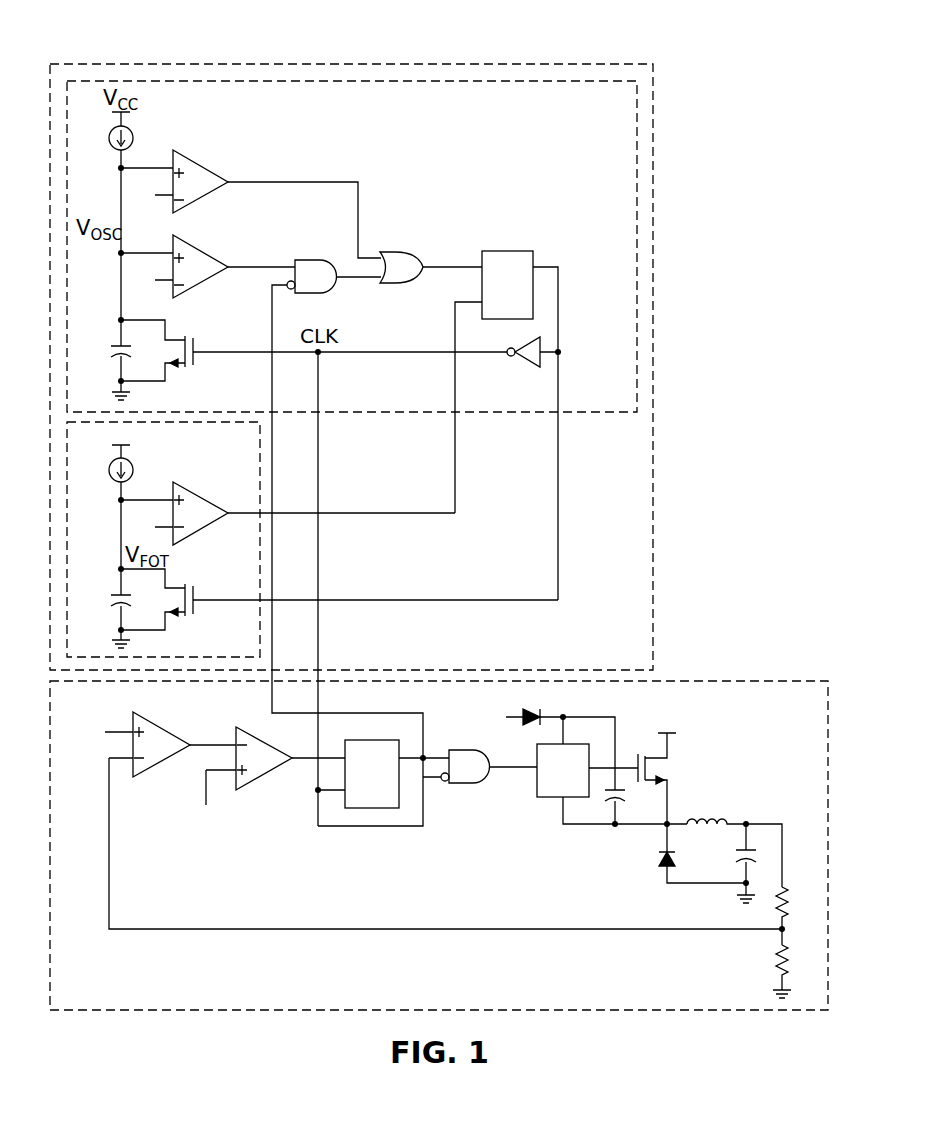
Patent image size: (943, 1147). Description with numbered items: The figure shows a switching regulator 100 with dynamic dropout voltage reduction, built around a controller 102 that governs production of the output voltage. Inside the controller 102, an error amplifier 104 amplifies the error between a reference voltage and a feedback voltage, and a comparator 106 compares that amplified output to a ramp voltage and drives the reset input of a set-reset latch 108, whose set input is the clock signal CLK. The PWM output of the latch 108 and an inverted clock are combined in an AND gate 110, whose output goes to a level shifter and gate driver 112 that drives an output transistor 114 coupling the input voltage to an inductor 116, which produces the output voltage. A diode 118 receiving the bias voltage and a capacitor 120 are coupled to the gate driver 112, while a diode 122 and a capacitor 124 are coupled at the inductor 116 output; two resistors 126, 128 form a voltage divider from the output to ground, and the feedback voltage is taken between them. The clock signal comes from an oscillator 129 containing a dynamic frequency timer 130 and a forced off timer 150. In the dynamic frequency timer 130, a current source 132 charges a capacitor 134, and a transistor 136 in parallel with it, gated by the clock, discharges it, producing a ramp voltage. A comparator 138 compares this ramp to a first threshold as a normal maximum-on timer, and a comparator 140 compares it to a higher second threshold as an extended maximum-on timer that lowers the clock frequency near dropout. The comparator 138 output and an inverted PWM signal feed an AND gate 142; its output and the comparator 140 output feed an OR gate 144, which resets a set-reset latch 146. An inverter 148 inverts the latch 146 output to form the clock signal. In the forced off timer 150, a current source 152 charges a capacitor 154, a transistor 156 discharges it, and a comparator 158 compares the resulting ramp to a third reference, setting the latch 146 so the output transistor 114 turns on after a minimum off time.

The switching regulator 100 is at (688, 46).
The controller 102 is at (96, 1000).
The error amplifier 104 is at (166, 730).
The comparator 106 is at (276, 770).
The set-reset latch 108 is at (378, 808).
The AND gate 110 is at (460, 783).
The level shifter and gate driver 112 is at (540, 797).
The output transistor 114 is at (653, 762).
The inductor 116 is at (721, 816).
The diode 118 is at (541, 713).
The capacitor 120 is at (608, 808).
The diode 122 is at (662, 870).
The capacitor 124 is at (743, 864).
The resistor 126 is at (787, 891).
The resistor 128 is at (774, 964).
The oscillator 129 is at (646, 658).
The dynamic frequency timer 130 is at (629, 405).
The current source 132 is at (132, 133).
The capacitor 134 is at (113, 345).
The transistor 136 is at (196, 350).
The comparator 138 is at (204, 257).
The comparator 140 is at (204, 172).
The AND gate 142 is at (302, 259).
The OR gate 144 is at (394, 252).
The set-reset latch 146 is at (500, 251).
The inverter 148 is at (532, 368).
The forced off timer 150 is at (256, 650).
The current source 152 is at (110, 465).
The capacitor 154 is at (113, 595).
The transistor 156 is at (196, 600).
The comparator 158 is at (208, 528).